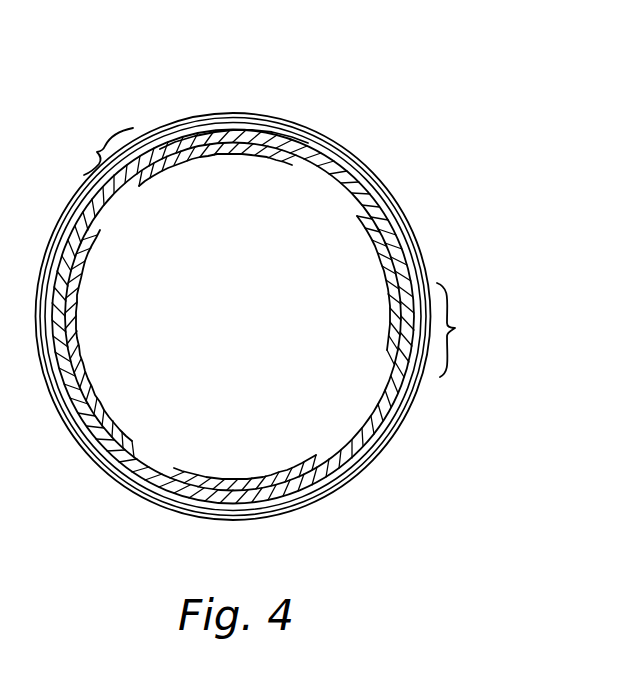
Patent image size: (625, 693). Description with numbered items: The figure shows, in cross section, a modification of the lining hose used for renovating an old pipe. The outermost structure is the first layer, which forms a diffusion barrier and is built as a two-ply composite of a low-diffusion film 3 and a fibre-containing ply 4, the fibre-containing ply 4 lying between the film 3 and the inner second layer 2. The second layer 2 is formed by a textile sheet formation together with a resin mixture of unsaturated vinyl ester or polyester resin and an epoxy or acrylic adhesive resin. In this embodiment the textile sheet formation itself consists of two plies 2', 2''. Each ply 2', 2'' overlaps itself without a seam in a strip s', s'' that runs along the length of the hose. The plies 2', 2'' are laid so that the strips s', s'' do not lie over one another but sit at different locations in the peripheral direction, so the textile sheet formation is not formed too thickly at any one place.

The second layer 2 is at (267, 317).
The first ply of the textile sheet formation 2' is at (234, 105).
The second ply of the textile sheet formation 2'' is at (233, 316).
The low-diffusion film 3 is at (428, 244).
The fibre-containing ply 4 is at (405, 214).
The overlap strip of the first ply s' is at (105, 147).
The overlap strip of the second ply s'' is at (463, 330).